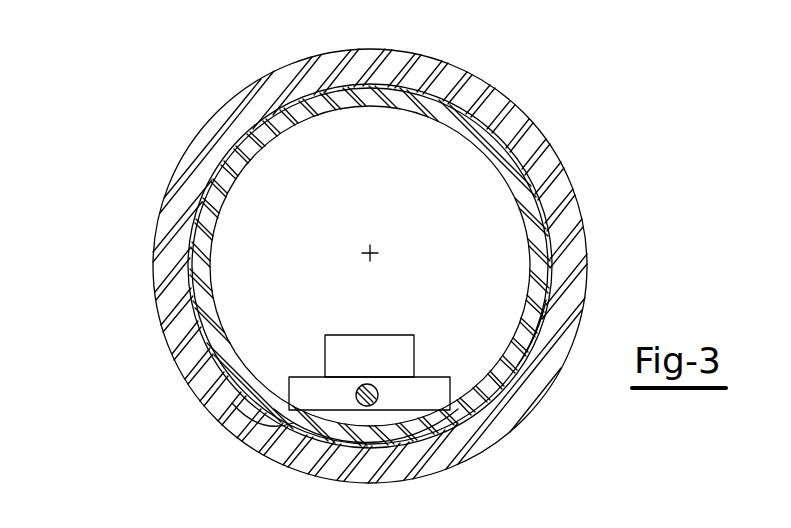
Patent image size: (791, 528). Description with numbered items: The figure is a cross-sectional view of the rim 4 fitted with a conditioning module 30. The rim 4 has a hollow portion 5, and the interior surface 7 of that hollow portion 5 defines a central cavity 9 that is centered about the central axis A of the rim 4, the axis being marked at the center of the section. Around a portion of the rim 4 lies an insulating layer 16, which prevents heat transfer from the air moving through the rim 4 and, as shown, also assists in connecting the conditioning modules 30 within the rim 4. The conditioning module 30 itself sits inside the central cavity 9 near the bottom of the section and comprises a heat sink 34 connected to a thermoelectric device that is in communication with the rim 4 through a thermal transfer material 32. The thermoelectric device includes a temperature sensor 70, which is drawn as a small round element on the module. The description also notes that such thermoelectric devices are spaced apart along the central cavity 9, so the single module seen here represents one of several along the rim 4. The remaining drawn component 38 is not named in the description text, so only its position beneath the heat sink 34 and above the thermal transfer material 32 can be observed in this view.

The conditioning module 30 is at (160, 90).
The rim 4 is at (152, 243).
The insulating layer 16 is at (548, 238).
The hollow portion 5 is at (465, 195).
The central cavity 9 is at (490, 218).
The interior surface 7 is at (537, 335).
The central axis A is at (368, 248).
The heat sink 34 is at (358, 350).
The mounting plate 38 is at (432, 395).
The temperature sensor 70 is at (376, 402).
The thermal transfer material 32 is at (262, 452).